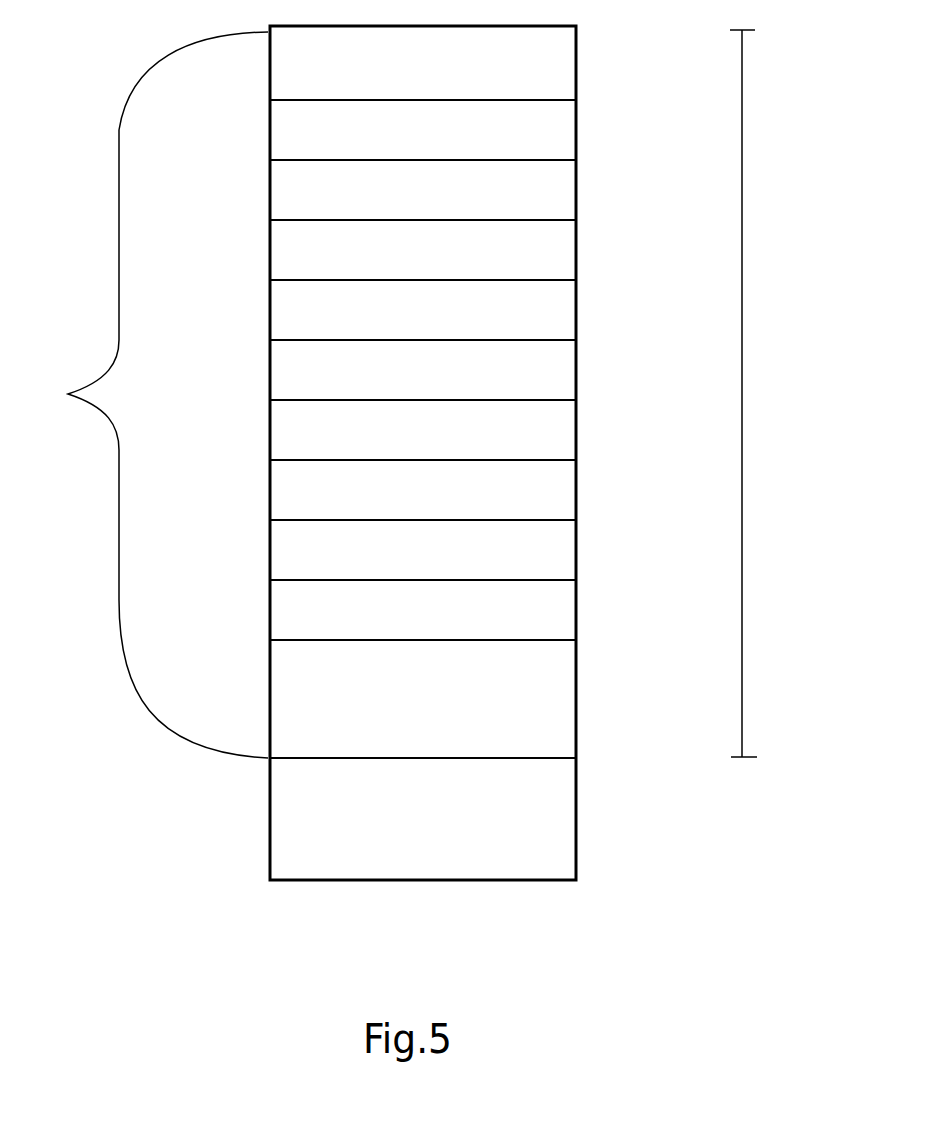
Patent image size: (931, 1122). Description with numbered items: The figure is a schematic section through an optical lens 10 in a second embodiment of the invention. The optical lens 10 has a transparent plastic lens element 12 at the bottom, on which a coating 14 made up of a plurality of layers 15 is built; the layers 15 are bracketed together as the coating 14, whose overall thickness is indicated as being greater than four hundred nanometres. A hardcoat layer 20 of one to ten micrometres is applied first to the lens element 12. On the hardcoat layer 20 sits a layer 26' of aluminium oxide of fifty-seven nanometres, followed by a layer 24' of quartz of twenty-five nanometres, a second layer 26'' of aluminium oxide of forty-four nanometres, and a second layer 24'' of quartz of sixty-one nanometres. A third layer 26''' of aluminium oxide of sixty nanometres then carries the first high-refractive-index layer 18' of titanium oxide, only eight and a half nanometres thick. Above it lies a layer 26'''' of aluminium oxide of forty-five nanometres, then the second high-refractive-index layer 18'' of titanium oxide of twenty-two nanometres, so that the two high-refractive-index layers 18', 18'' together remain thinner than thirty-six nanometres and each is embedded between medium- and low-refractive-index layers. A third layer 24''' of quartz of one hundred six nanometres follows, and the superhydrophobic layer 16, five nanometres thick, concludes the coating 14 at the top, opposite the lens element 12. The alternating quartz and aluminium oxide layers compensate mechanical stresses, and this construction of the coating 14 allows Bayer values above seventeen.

The optical lens 10 is at (224, 928).
The lens element 12 is at (293, 829).
The coating 14 is at (744, 537).
The layers 15 is at (307, 392).
The superhydrophobic layer 16 is at (293, 75).
The first high-refractive-index layer 18' is at (436, 310).
The second high-refractive-index layer 18'' is at (433, 190).
The hardcoat layer 20 is at (293, 690).
The layer of quartz 24' is at (435, 550).
The second layer of quartz 24'' is at (434, 430).
The third layer of quartz 24''' is at (436, 130).
The layer of aluminium oxide 26' is at (435, 610).
The second layer of aluminium oxide 26'' is at (434, 490).
The third layer of aluminium oxide 26''' is at (432, 370).
The layer of aluminium oxide 26'''' is at (432, 250).